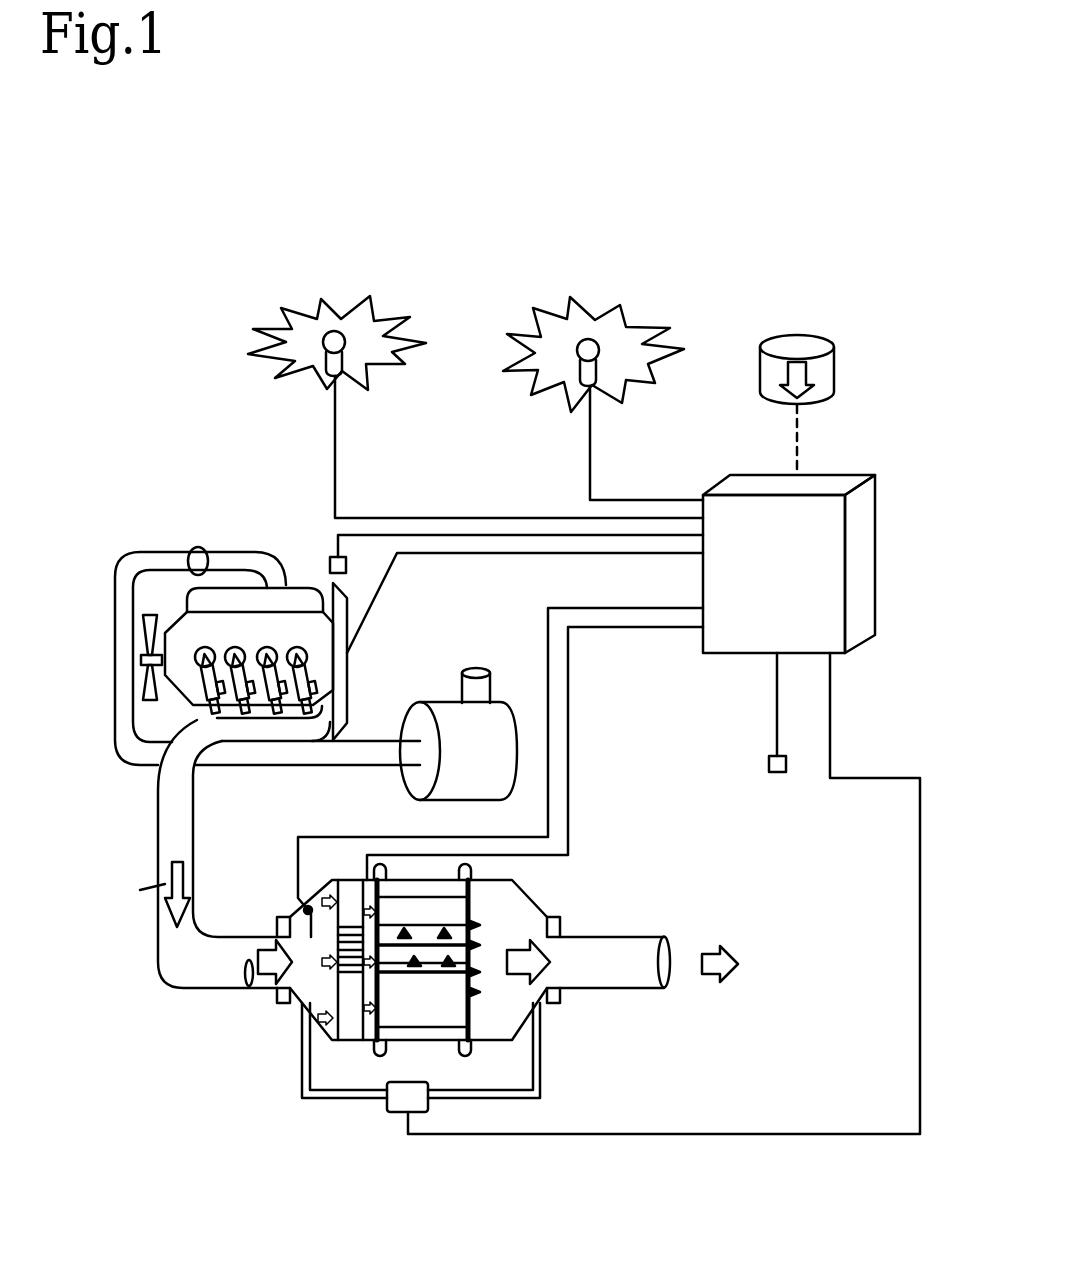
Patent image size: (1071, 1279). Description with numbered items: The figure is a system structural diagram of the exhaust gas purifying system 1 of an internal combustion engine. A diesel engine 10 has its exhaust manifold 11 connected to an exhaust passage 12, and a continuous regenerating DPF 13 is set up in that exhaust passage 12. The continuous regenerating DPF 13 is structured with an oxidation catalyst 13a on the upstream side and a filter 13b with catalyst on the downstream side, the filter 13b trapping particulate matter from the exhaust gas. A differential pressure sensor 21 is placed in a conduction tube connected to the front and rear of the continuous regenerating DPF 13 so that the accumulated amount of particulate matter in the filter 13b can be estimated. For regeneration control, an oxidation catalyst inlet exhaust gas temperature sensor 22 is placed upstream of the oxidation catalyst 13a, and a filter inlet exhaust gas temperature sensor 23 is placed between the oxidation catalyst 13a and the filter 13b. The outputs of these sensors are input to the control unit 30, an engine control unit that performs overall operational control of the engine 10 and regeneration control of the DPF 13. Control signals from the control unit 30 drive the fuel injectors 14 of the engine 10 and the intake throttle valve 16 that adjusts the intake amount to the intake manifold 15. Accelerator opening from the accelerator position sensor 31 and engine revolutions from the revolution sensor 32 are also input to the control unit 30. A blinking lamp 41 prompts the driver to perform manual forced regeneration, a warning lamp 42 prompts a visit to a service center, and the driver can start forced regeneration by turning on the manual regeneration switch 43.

The exhaust gas purifying system 1 is at (726, 371).
The diesel engine 10 is at (182, 614).
The exhaust manifold 11 is at (183, 721).
The exhaust passage 12 is at (190, 968).
The continuous regenerating DPF 13 is at (527, 1030).
The oxidation catalyst 13a is at (350, 1010).
The filter with catalyst 13b is at (433, 1003).
The fuel injectors 14 is at (205, 679).
The intake manifold 15 is at (285, 600).
The intake throttle valve 16 is at (190, 547).
The differential pressure sensor 21 is at (405, 1100).
The oxidation catalyst inlet exhaust gas temperature sensor 22 is at (305, 908).
The filter inlet exhaust gas temperature sensor 23 is at (372, 880).
The control unit 30 is at (866, 557).
The accelerator position sensor 31 is at (778, 772).
The revolution sensor 32 is at (331, 557).
The blinking lamp 41 is at (332, 331).
The warning lamp 42 is at (588, 339).
The manual regeneration switch 43 is at (815, 342).